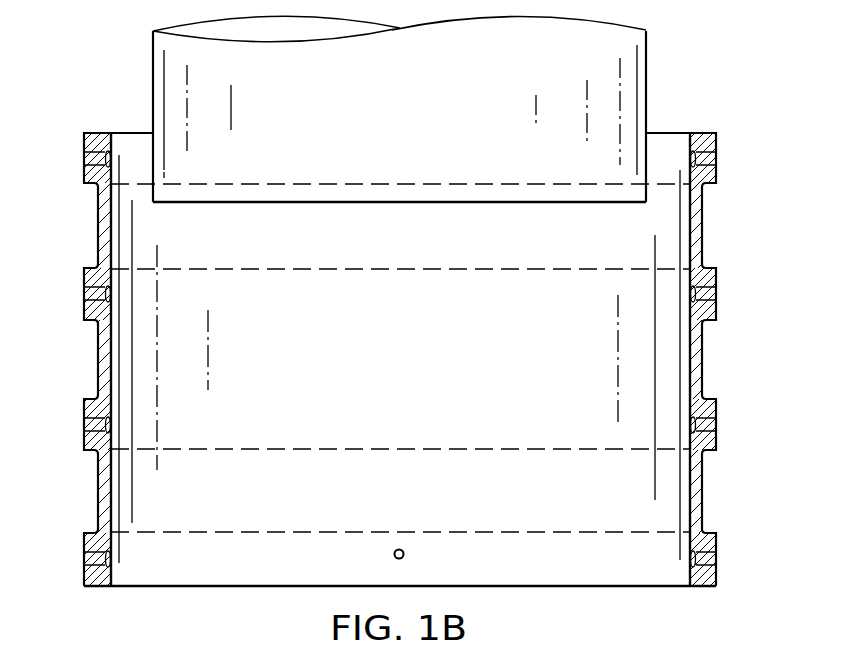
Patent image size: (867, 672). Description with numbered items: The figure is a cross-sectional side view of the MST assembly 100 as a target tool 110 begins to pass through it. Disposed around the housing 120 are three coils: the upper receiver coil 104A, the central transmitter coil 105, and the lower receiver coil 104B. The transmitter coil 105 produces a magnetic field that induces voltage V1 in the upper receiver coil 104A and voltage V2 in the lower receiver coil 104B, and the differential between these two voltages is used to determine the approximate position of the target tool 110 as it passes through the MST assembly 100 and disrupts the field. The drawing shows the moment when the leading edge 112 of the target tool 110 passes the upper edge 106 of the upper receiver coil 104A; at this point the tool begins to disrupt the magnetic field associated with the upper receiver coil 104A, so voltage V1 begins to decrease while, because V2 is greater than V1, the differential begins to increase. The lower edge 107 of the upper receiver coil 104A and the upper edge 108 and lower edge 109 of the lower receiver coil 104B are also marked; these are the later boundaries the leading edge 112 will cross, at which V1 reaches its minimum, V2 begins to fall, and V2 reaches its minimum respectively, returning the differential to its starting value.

The MST assembly 100 is at (113, 80).
The upper receiver coil 104A is at (702, 220).
The lower receiver coil 104B is at (702, 490).
The central transmitter coil 105 is at (99, 355).
The upper edge of receiver coil 104A 106 is at (397, 184).
The lower edge of receiver coil 104A 107 is at (480, 268).
The upper edge of receiver coil 104B 108 is at (345, 450).
The lower edge of receiver coil 104B 109 is at (480, 532).
The target tool 110 is at (647, 80).
The leading edge of target tool 112 is at (345, 203).
The housing 120 is at (724, 139).